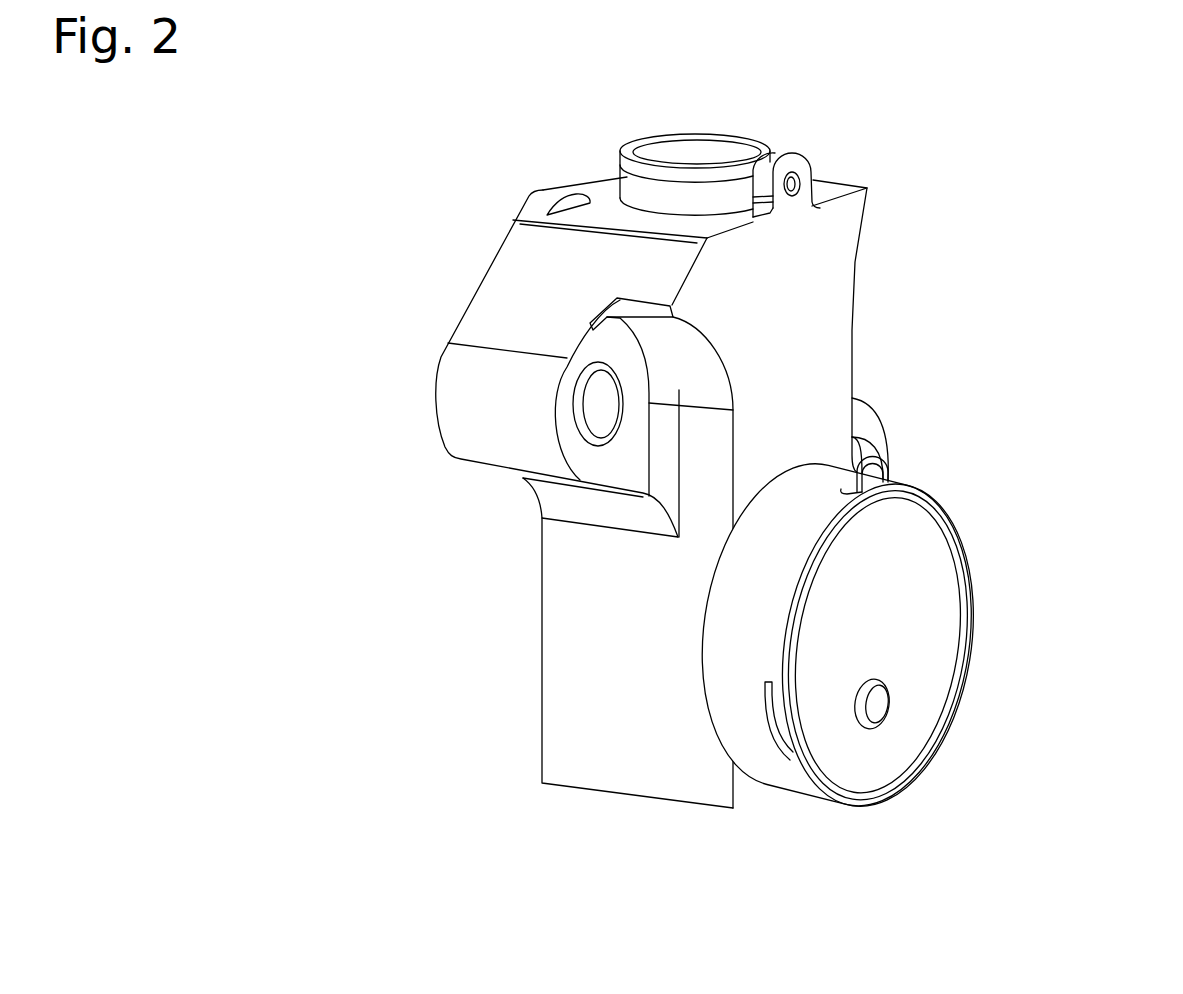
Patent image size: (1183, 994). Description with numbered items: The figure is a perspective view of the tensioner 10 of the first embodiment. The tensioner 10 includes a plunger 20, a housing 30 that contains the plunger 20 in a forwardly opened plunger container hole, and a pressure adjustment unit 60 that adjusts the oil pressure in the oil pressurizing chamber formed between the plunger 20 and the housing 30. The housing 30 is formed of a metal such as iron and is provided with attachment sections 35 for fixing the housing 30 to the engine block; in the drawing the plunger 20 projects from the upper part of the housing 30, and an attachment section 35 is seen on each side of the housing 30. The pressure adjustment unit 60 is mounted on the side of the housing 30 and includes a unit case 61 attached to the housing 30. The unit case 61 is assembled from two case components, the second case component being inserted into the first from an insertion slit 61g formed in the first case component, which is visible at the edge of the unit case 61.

The tensioner 10 is at (626, 414).
The plunger 20 is at (715, 150).
The housing 30 is at (568, 602).
The attachment sections 35 is at (861, 412).
The pressure adjustment unit 60 is at (838, 699).
The unit case 61 is at (730, 673).
The insertion slit 61g is at (782, 778).